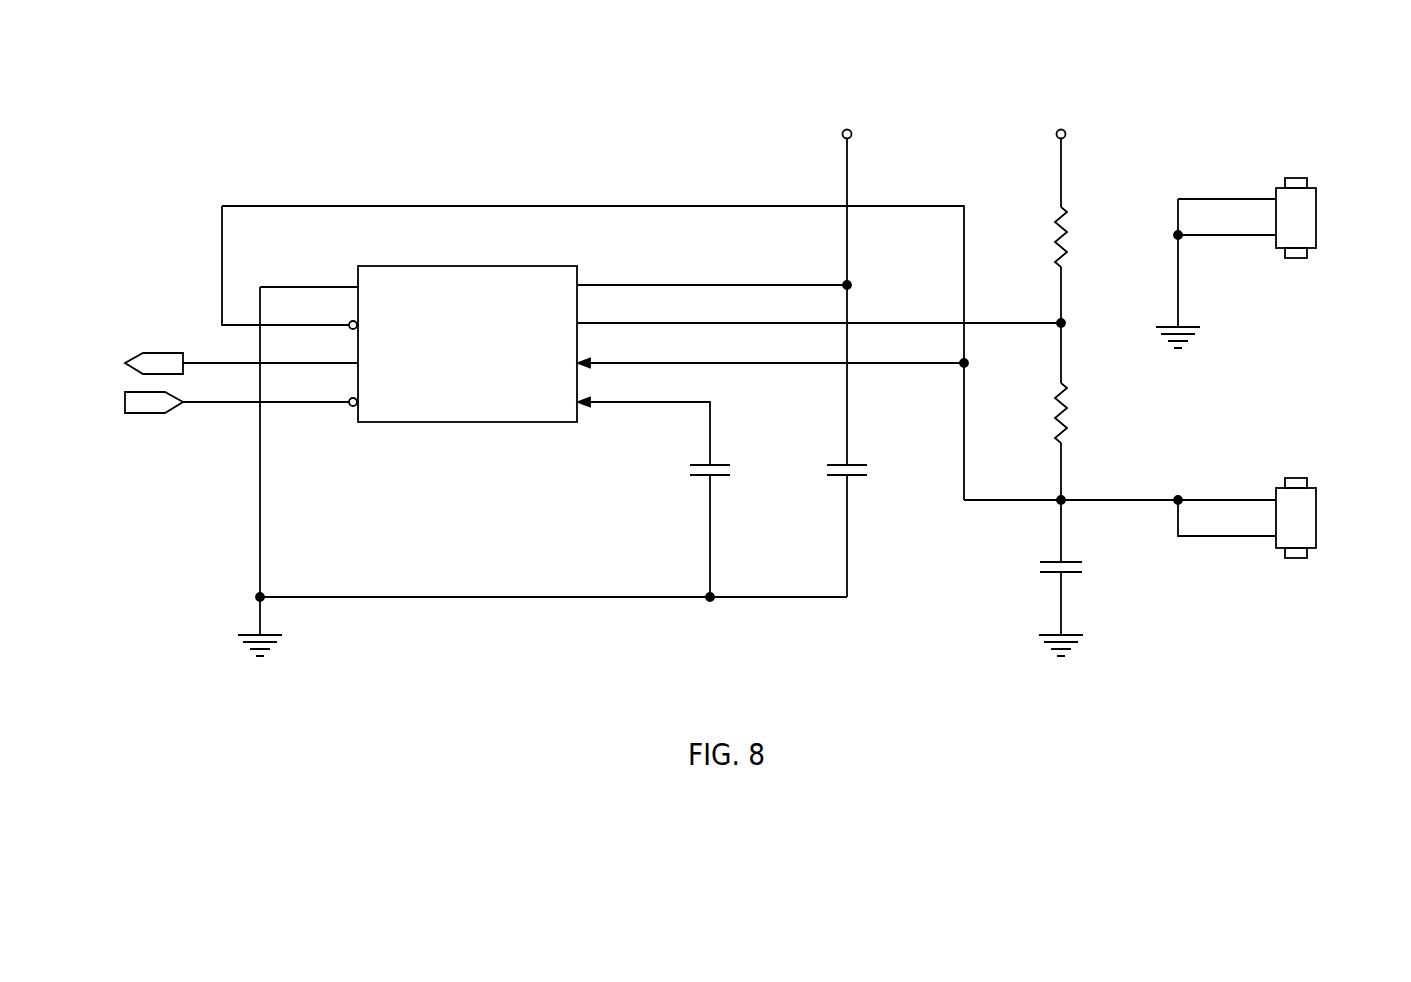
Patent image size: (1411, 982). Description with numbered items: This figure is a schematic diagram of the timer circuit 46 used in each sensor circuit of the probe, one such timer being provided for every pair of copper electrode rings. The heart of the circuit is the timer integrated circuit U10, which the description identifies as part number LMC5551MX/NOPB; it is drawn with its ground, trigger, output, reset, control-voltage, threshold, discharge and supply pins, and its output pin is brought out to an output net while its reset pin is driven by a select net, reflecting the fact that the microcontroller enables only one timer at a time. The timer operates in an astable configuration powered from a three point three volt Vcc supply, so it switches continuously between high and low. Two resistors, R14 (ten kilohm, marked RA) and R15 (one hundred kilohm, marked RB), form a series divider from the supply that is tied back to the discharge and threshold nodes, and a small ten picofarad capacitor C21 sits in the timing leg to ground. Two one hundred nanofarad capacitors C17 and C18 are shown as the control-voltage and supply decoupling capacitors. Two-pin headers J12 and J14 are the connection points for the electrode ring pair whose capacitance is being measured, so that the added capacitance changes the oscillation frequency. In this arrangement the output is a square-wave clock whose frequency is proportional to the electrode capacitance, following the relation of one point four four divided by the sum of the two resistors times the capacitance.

The timer circuit 46 is at (308, 82).
The 555 timer IC LMC555IMX/NOPB U10 is at (467, 362).
The resistor RA 10K R14 is at (1070, 243).
The resistor RB 100K R15 is at (1072, 419).
The capacitor 100 nF C17 is at (749, 505).
The capacitor 100 nF C18 is at (887, 505).
The capacitor 10 pF C21 is at (1094, 592).
The header 2x1 connector J12 is at (1312, 161).
The header 2x1 connector J14 is at (1312, 462).